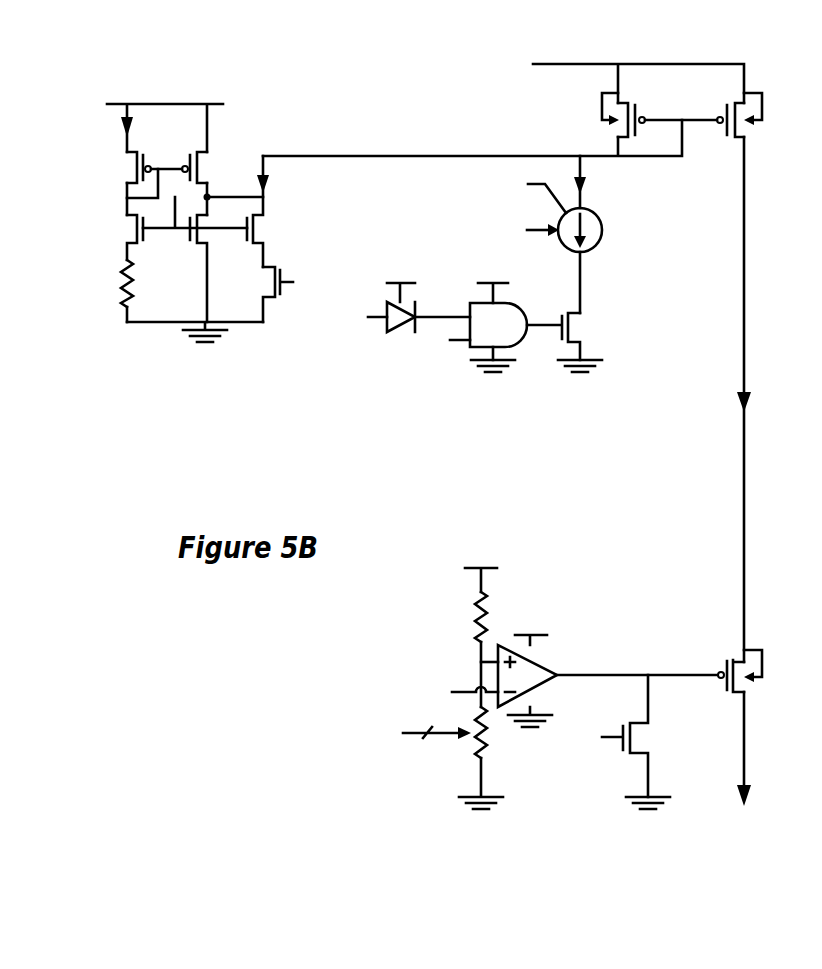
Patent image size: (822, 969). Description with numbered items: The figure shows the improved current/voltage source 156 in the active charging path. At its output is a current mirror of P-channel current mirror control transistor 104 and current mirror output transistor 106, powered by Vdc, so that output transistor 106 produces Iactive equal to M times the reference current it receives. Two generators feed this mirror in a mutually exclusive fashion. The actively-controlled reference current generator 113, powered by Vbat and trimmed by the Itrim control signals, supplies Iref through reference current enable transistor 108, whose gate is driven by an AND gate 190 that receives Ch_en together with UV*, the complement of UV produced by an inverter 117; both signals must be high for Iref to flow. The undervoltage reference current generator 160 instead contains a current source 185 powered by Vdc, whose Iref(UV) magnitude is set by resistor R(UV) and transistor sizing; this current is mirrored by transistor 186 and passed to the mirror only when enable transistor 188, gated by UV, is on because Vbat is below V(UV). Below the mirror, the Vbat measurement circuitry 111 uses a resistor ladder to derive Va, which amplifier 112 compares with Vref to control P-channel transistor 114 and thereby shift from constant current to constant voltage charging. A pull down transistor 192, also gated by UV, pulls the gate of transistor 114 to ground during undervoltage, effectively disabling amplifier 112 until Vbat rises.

The current/voltage source 156 is at (258, 56).
The current source 185 is at (92, 186).
The transistor 186 is at (301, 211).
The enable transistor 188 is at (276, 294).
The undervoltage reference current generator 160 is at (112, 358).
The current mirror control transistor 104 is at (639, 115).
The current mirror output transistor 106 is at (754, 135).
The actively-controlled reference current generator 113 is at (618, 388).
The AND gate 190 is at (481, 322).
The reference current enable transistor 108 is at (574, 342).
The inverter 117 is at (397, 333).
The Vbat measurement circuitry 111 is at (440, 624).
The amplifier 112 is at (553, 672).
The P-channel transistor 114 is at (762, 671).
The pull down transistor 192 is at (633, 742).